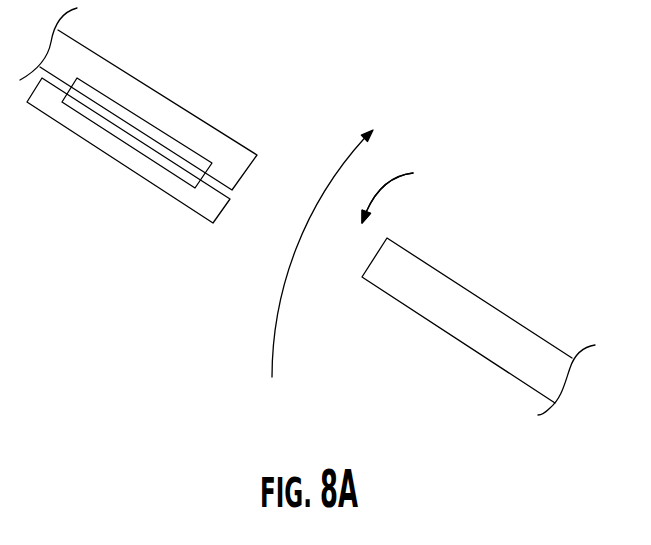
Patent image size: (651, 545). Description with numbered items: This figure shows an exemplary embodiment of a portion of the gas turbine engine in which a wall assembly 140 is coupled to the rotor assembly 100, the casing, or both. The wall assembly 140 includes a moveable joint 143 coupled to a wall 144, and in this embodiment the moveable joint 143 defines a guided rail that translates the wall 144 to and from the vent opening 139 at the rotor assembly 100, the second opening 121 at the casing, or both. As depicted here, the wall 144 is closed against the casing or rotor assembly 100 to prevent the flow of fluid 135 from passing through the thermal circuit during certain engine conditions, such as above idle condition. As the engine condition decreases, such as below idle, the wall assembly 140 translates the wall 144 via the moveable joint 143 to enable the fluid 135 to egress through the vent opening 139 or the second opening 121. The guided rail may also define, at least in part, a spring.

The rotor assembly 100 is at (523, 330).
The fluid 135 is at (273, 308).
The vent opening 139 is at (427, 189).
The second opening 121 is at (387, 198).
The wall assembly 140 is at (226, 258).
The moveable joint 143 is at (117, 112).
The wall 144 is at (147, 178).